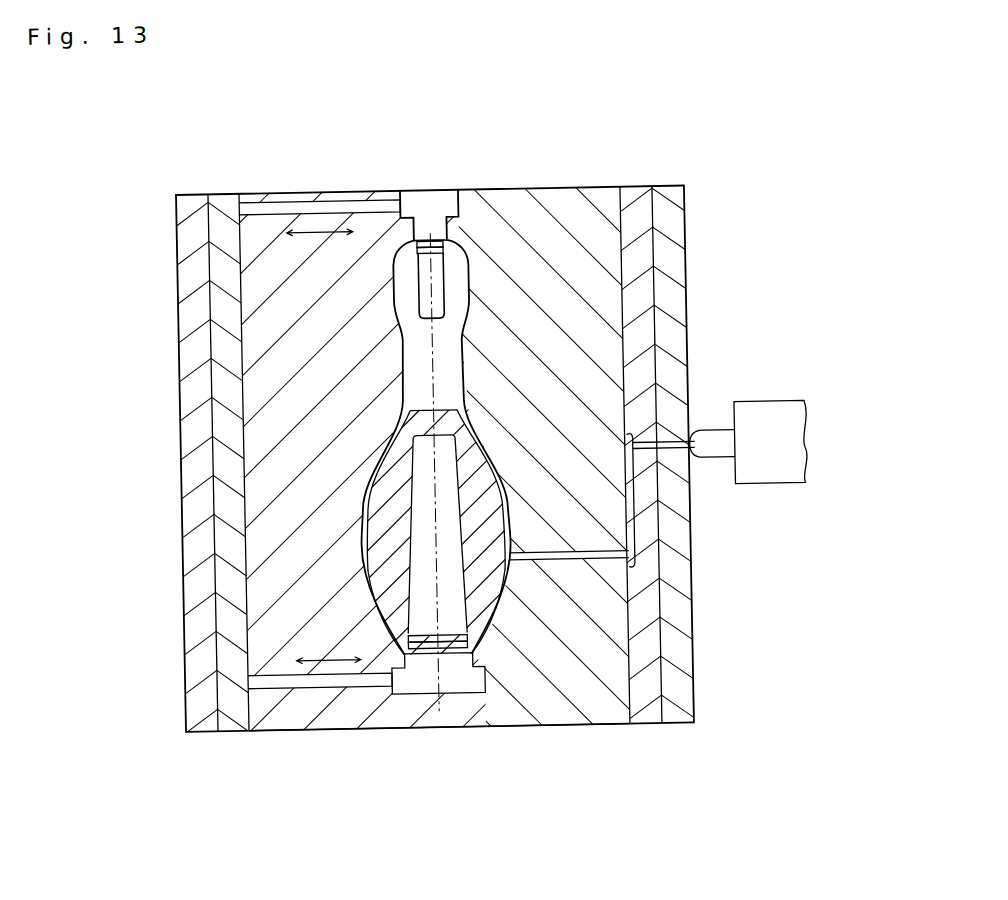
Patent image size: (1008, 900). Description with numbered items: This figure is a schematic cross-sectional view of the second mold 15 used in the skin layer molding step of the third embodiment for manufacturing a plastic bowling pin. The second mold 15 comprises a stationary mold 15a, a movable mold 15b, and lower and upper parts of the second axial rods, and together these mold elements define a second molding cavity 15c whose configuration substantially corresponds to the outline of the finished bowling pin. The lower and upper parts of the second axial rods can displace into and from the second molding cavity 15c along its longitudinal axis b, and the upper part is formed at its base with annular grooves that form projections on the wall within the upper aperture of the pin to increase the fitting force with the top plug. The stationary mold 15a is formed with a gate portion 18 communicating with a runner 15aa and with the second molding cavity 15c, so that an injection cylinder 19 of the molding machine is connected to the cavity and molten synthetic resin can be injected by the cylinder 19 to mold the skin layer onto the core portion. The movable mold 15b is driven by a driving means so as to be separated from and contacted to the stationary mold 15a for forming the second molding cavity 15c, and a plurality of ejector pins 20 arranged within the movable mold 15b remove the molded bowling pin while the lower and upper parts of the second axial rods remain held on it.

The second mold 15 is at (684, 695).
The stationary mold 15a is at (598, 295).
The movable mold 15b is at (250, 358).
The second molding cavity 15c is at (610, 734).
The runner 15aa is at (661, 458).
The gate portion 18 is at (582, 566).
The injection cylinder 19 is at (756, 411).
The ejector pins 20 is at (273, 194).
The longitudinal axis b is at (428, 300).